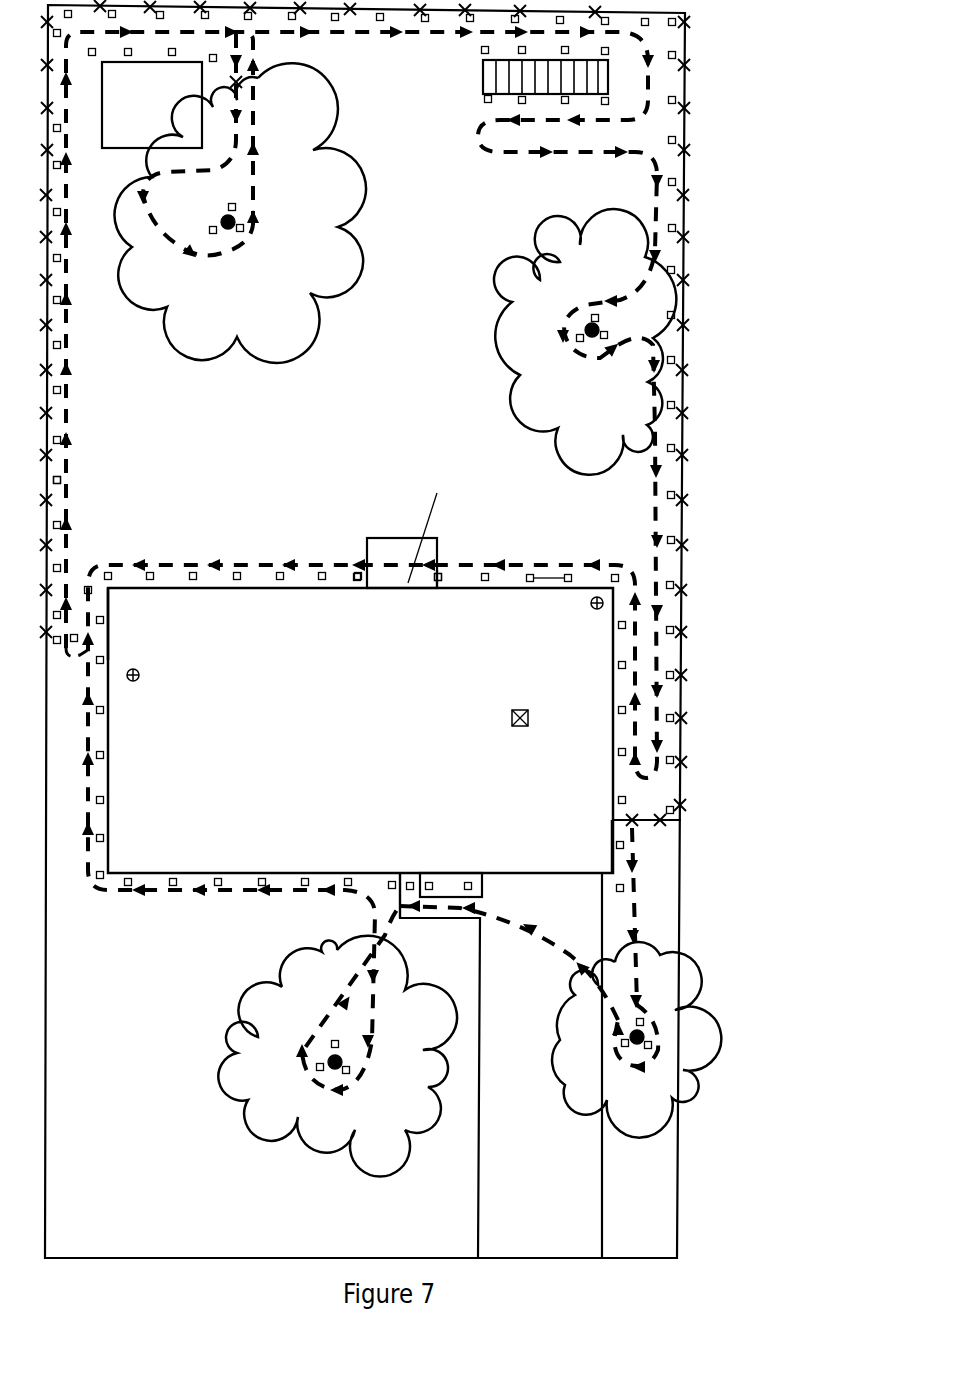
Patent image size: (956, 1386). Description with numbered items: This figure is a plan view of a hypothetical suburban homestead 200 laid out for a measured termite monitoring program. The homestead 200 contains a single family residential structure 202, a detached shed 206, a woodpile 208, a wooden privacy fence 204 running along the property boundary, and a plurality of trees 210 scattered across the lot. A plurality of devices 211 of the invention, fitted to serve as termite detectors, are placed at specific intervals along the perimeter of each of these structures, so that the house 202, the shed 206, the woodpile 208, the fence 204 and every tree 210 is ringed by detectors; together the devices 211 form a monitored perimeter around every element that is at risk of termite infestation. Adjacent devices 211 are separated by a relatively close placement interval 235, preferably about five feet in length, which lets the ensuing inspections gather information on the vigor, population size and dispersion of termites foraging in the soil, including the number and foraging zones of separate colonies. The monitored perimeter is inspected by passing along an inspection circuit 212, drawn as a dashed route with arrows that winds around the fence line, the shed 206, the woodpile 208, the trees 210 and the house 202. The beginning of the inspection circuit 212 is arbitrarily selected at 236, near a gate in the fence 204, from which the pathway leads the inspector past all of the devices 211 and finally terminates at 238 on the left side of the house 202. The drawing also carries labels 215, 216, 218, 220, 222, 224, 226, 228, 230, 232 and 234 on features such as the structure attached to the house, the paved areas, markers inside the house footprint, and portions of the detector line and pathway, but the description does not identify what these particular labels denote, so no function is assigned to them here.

The suburban homestead 200 is at (419, 629).
The single family residential structure 202 is at (360, 730).
The wooden privacy fence 204 is at (365, 405).
The shed 206 is at (177, 148).
The woodpile 208 is at (510, 76).
The trees 210 is at (233, 230).
The devices 211 is at (58, 522).
The inspection circuit 212 is at (361, 561).
The docking station 215 is at (402, 538).
The station edge 216 is at (437, 585).
The driveway 218 is at (542, 880).
The walkway 220 is at (410, 873).
The station entrance 222 is at (430, 525).
The beacon 224 is at (145, 676).
The base station transmitter 226 is at (512, 712).
The boundary markers 228 is at (365, 542).
The house corner 230 is at (110, 648).
The trees 232 is at (291, 888).
The porch step 234 is at (448, 884).
The placement interval 235 is at (548, 577).
The beginning of inspection circuit 236 is at (646, 943).
The termination of inspection circuit 238 is at (86, 626).